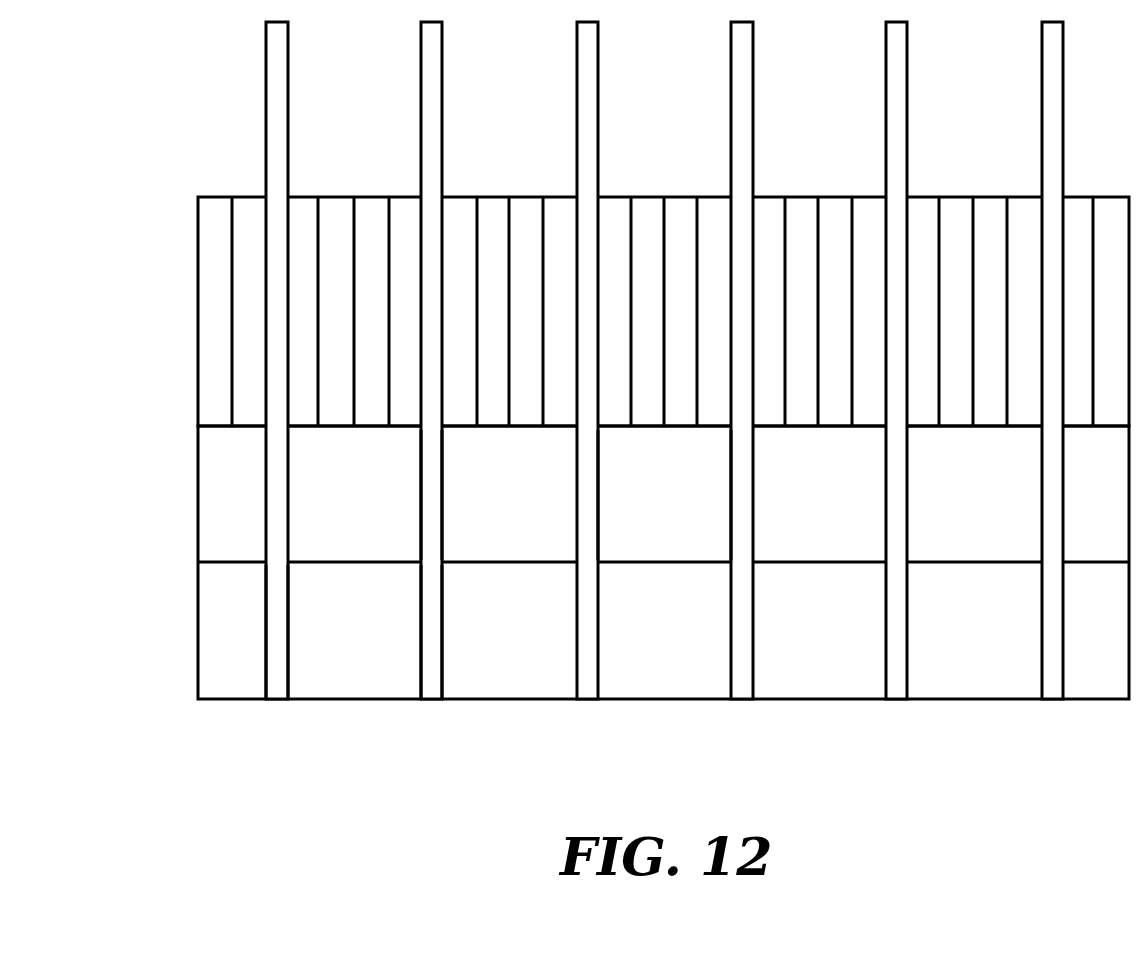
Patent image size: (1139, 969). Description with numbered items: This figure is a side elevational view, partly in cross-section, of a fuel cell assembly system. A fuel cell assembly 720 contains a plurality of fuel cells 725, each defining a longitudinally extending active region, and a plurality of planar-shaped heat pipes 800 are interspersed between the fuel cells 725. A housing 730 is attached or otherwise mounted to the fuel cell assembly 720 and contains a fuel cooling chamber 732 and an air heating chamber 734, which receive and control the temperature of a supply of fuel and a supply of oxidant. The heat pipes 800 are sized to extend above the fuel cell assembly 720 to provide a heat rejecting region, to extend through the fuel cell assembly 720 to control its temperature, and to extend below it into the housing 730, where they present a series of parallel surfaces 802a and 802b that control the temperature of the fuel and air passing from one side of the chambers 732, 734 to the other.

The fuel cell assembly 720 is at (608, 269).
The fuel cell 725 is at (559, 207).
The housing 730 is at (192, 535).
The fuel cooling chamber 732 is at (478, 670).
The air heating chamber 734 is at (784, 522).
The heat pipes 800 is at (280, 61).
The parallel surface 802a is at (442, 498).
The parallel surface 802b is at (421, 500).